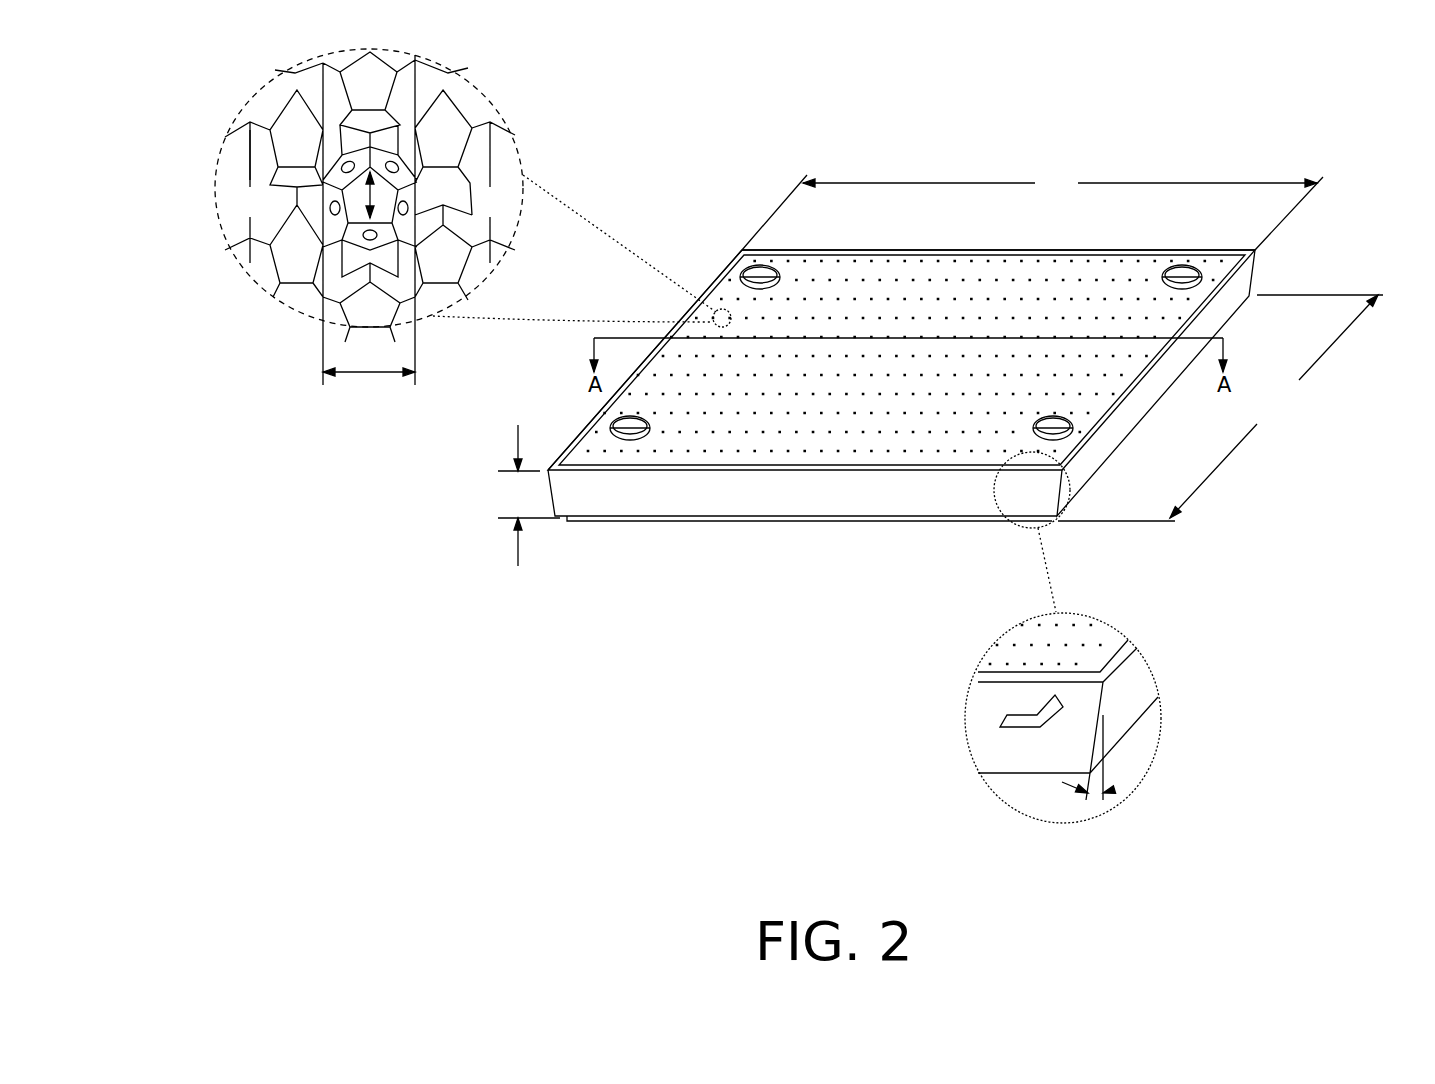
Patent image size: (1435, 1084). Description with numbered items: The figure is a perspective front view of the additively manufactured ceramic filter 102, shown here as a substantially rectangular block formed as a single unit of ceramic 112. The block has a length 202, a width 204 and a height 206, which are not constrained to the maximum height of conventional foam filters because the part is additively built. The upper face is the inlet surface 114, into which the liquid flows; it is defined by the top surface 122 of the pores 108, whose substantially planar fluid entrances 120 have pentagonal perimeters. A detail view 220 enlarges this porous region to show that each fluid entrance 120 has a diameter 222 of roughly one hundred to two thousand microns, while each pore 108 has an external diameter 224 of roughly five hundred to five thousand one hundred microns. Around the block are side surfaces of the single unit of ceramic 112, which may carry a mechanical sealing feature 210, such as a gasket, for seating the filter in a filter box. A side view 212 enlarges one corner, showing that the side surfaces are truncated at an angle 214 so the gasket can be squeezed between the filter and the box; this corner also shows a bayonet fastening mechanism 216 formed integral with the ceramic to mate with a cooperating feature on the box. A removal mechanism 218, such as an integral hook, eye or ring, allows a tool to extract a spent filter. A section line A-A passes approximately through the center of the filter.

The additively manufactured ceramic filter 102 is at (707, 210).
The pores 108 is at (277, 112).
The single unit of ceramic 112 is at (633, 521).
The inlet surface 114 is at (905, 356).
The fluid entrance 120 is at (295, 141).
The top surface 122 is at (248, 213).
The length 202 is at (1032, 211).
The width 204 is at (1220, 408).
The height 206 is at (518, 566).
The mechanical sealing feature 210 is at (1033, 518).
The side view 212 is at (1110, 625).
The angle 214 is at (1103, 793).
The bayonet fastening mechanism 216 is at (1000, 715).
The removal mechanism 218 is at (773, 273).
The detail view 220 is at (240, 115).
The diameter 222 is at (372, 188).
The external diameter 224 is at (372, 375).